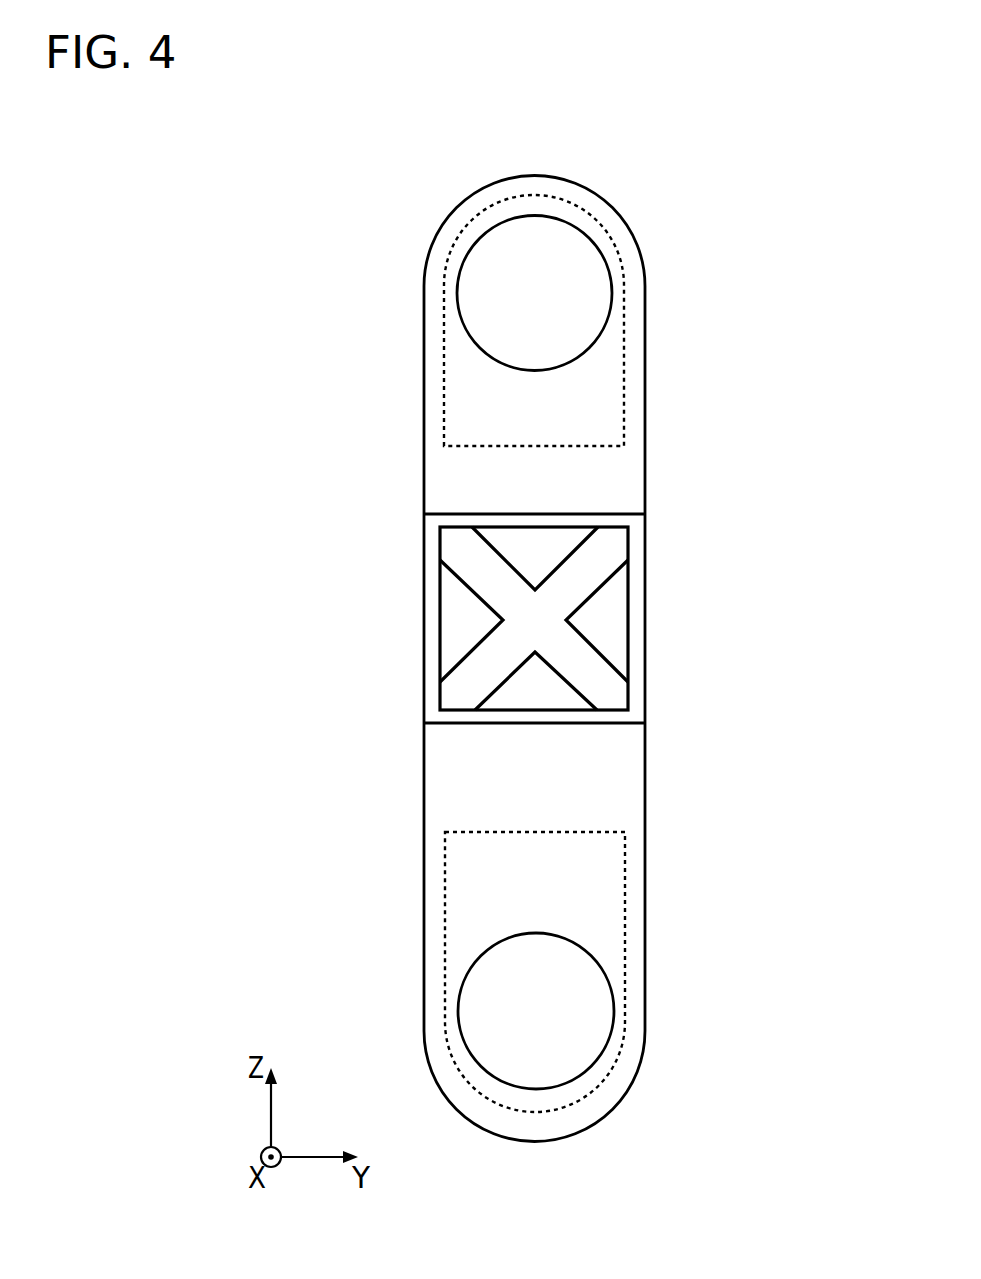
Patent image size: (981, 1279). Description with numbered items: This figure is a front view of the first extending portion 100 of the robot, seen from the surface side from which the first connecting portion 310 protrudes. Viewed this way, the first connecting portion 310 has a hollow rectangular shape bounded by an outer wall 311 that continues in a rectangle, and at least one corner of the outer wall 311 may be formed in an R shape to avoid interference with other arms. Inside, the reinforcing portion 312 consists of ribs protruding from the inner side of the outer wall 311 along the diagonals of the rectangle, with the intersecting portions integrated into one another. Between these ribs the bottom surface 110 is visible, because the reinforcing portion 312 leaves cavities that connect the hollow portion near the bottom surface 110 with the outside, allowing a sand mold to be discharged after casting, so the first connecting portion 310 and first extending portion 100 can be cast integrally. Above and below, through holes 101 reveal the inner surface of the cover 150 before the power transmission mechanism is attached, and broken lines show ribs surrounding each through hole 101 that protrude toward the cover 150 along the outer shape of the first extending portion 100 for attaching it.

The first extending portion 100 is at (710, 455).
The through hole 101 is at (486, 358).
The cover 150 is at (480, 293).
The first connecting portion 310 is at (518, 589).
The outer wall 311 is at (537, 522).
The reinforcing portion 312 is at (550, 605).
The bottom surface 110 is at (450, 633).